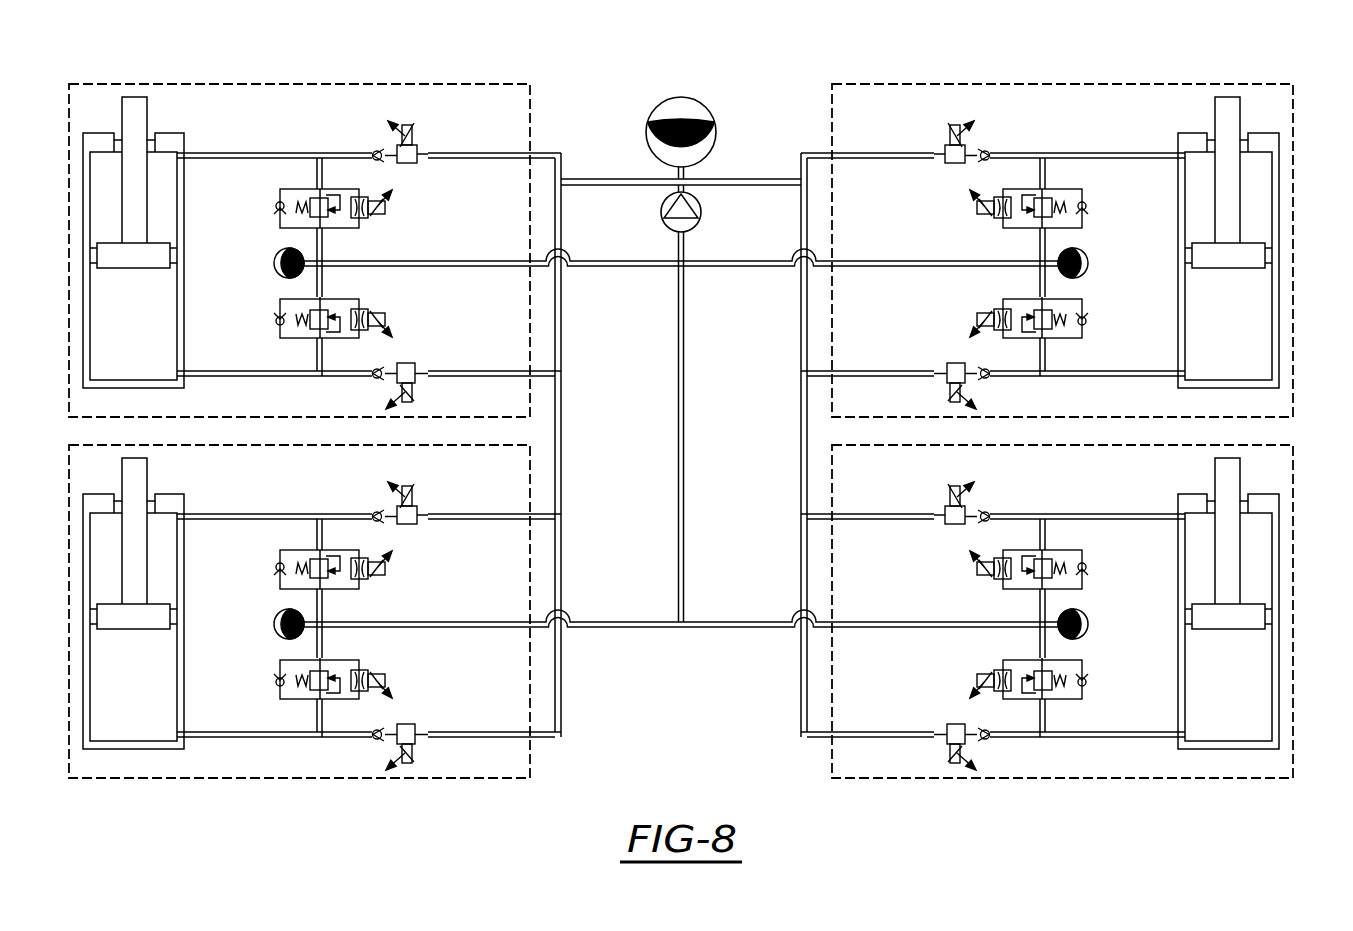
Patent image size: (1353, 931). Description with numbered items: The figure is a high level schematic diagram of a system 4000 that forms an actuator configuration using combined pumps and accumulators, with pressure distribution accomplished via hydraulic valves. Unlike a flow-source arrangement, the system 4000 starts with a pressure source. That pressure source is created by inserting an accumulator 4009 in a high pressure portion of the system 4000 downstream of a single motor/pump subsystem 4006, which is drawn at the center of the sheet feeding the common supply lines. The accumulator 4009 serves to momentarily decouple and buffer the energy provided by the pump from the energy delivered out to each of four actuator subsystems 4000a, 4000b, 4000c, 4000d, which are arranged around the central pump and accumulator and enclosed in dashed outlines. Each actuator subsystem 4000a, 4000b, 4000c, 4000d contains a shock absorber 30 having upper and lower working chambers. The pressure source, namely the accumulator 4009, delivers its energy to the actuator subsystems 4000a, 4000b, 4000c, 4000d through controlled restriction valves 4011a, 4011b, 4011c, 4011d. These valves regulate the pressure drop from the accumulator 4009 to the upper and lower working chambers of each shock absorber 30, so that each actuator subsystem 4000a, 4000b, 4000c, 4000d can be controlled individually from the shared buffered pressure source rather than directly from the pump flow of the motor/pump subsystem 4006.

The system 4000 is at (762, 88).
The actuator subsystem 4000a is at (213, 82).
The actuator subsystem 4000b is at (1149, 82).
The actuator subsystem 4000c is at (213, 780).
The actuator subsystem 4000d is at (1149, 780).
The accumulator 4009 is at (681, 96).
The motor/pump subsystem 4006 is at (661, 212).
The controlled restriction valve 4011a is at (409, 363).
The controlled restriction valve 4011b is at (953, 363).
The controlled restriction valve 4011c is at (409, 724).
The controlled restriction valve 4011d is at (953, 724).
The shock absorber 30 is at (75, 307).